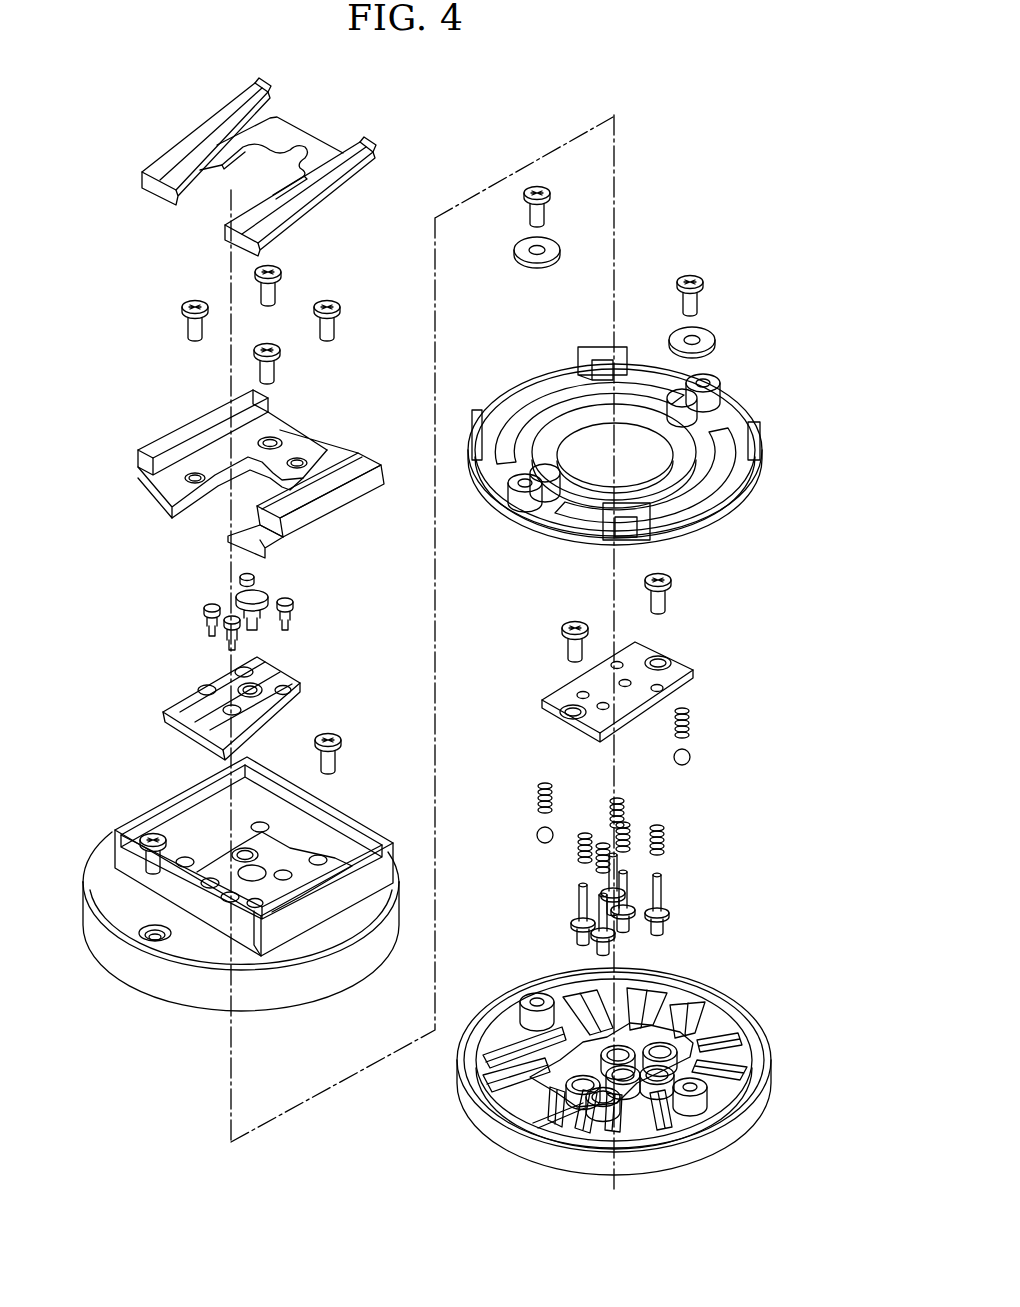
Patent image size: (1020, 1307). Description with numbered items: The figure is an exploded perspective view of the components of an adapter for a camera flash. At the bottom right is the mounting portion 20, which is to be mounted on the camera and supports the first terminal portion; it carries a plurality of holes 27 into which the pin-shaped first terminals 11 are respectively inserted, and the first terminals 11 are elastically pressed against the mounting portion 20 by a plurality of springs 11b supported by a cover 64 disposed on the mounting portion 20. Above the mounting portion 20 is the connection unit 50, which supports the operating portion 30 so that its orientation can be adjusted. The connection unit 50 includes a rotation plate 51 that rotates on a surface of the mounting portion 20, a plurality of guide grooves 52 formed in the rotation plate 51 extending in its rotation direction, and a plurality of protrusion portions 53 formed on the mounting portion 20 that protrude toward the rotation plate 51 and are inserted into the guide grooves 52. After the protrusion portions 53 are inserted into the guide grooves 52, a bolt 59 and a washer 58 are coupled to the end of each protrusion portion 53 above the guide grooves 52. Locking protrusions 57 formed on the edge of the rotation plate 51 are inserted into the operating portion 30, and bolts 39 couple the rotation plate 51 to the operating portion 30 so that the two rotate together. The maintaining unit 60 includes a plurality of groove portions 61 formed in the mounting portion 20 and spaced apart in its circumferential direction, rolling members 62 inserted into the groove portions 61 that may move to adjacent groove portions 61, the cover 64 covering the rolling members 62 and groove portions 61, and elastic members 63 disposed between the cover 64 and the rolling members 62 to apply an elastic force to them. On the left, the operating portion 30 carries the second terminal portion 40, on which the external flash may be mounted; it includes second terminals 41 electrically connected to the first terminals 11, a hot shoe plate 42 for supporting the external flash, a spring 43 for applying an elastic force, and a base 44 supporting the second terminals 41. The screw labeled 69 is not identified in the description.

The first terminals 11 is at (662, 904).
The springs 11b is at (667, 845).
The mounting portion 20 is at (470, 1123).
The holes 27 is at (600, 1105).
The operating portion 30 is at (120, 984).
The bolts 39 is at (333, 730).
The second terminal portion 40 is at (68, 238).
The second terminals 41 is at (200, 596).
The hot shoe plate 42 is at (182, 498).
The spring 43 is at (160, 192).
The base 44 is at (170, 705).
The connection unit 50 is at (759, 557).
The rotation plate 51 is at (673, 540).
The guide grooves 52 is at (718, 466).
The protrusion portions 53 is at (698, 1082).
The locking protrusions 57 is at (596, 350).
The washer 58 is at (716, 338).
The bolt 59 is at (700, 292).
The maintaining unit 60 is at (488, 727).
The groove portions 61 is at (510, 1045).
The rolling members 62 is at (540, 845).
The elastic members 63 is at (537, 808).
The cover 64 is at (548, 712).
The screw 69 is at (563, 620).